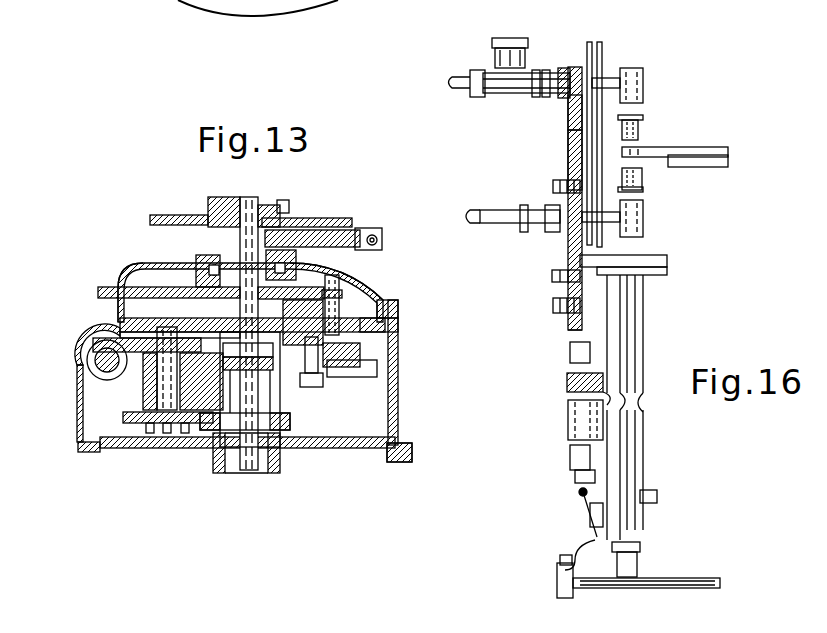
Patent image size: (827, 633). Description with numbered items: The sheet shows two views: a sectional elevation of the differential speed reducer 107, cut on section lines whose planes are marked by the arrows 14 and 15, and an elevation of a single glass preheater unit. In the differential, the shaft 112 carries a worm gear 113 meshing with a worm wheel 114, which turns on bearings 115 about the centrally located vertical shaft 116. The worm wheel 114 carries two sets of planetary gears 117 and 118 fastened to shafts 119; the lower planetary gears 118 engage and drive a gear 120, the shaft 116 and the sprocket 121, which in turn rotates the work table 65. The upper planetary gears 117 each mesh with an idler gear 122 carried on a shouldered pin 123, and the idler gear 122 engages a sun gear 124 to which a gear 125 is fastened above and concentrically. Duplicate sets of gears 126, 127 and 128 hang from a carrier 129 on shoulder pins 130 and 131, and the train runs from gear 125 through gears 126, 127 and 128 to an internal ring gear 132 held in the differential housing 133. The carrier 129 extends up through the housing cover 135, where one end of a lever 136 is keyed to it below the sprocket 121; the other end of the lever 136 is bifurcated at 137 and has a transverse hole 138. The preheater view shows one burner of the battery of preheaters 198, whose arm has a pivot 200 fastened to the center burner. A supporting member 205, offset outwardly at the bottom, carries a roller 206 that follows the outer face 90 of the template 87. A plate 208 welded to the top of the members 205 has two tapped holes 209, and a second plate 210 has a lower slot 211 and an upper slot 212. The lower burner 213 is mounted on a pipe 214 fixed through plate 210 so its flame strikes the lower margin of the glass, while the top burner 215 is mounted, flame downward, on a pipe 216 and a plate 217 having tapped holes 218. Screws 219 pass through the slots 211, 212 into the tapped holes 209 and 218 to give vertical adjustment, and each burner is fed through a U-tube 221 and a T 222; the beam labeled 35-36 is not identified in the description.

In FIG. 13, the differential speed reducer 107 is at (398, 414).
In FIG. 13, the shaft 112 is at (95, 362).
In FIG. 13, the worm gear 113 is at (95, 353).
In FIG. 13, the worm wheel 114 is at (364, 412).
In FIG. 13, the bearings 115 is at (282, 405).
In FIG. 13, the vertical shaft 116 is at (256, 197).
In FIG. 13, the planetary gears 117 is at (140, 339).
In FIG. 13, the planetary gears 118 is at (135, 425).
In FIG. 13, the shafts 119 is at (165, 398).
In FIG. 13, the gear 120 is at (290, 421).
In FIG. 13, the sprocket 121 is at (183, 216).
In FIG. 13, the idler gear 122 is at (335, 358).
In FIG. 13, the shouldered pins 123 is at (318, 380).
In FIG. 13, the sun gear 124 is at (285, 330).
In FIG. 13, the gear 125 is at (203, 330).
In FIG. 13, the gear 126 is at (385, 330).
In FIG. 13, the gear 127 is at (140, 324).
In FIG. 13, the gear 128 is at (118, 290).
In FIG. 13, the carrier 129 is at (345, 300).
In FIG. 13, the shoulder pin 130 is at (340, 290).
In FIG. 13, the shoulder pin 131 is at (211, 266).
In FIG. 13, the internal ring gear 132 is at (395, 306).
In FIG. 13, the differential housing 133 is at (395, 437).
In FIG. 13, the housing cover 135 is at (158, 263).
In FIG. 13, the lever 136 is at (353, 230).
In FIG. 13, the bifurcation 137 is at (382, 240).
In FIG. 13, the hole 138 is at (375, 237).
In FIG. 13, the section line 14 is at (68, 372).
In FIG. 13, the section line 15 is at (85, 297).
In FIG. 16, the preheaters 198 is at (635, 338).
In FIG. 16, the pivot 200 is at (570, 417).
In FIG. 16, the supporting member 205 is at (640, 455).
In FIG. 16, the roller 206 is at (557, 593).
In FIG. 16, the plate 208 is at (565, 326).
In FIG. 16, the tapped holes 209 is at (553, 276).
In FIG. 16, the second plate 210 is at (568, 240).
In FIG. 16, the slot 211 is at (568, 259).
In FIG. 16, the slot 212 is at (560, 118).
In FIG. 16, the lower burner 213 is at (645, 186).
In FIG. 16, the pipe 214 is at (618, 224).
In FIG. 16, the top burner 215 is at (645, 131).
In FIG. 16, the pipe 216 is at (608, 80).
In FIG. 16, the plate 217 is at (572, 68).
In FIG. 16, the tapped holes 218 is at (560, 160).
In FIG. 16, the screws 219 is at (553, 186).
In FIG. 16, the U-tube 221 is at (455, 77).
In FIG. 16, the T 222 is at (500, 93).
In FIG. 16, the beam 35-36 is at (672, 150).
In FIG. 16, the work table 65 is at (712, 168).
In FIG. 16, the template 87 is at (655, 583).
In FIG. 16, the outer face 90 is at (557, 580).